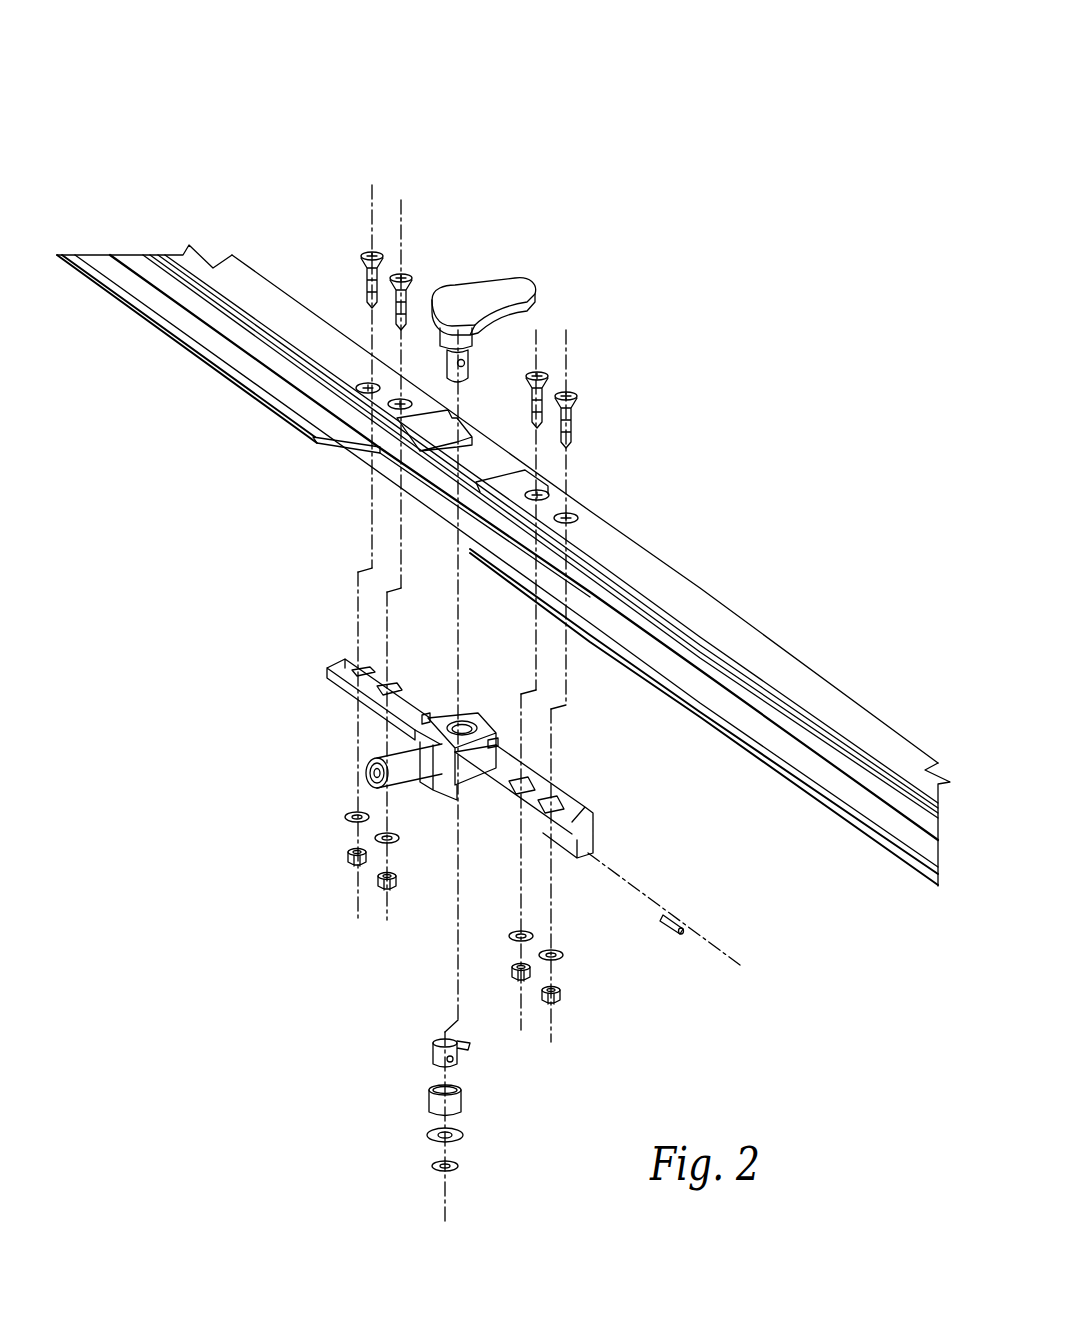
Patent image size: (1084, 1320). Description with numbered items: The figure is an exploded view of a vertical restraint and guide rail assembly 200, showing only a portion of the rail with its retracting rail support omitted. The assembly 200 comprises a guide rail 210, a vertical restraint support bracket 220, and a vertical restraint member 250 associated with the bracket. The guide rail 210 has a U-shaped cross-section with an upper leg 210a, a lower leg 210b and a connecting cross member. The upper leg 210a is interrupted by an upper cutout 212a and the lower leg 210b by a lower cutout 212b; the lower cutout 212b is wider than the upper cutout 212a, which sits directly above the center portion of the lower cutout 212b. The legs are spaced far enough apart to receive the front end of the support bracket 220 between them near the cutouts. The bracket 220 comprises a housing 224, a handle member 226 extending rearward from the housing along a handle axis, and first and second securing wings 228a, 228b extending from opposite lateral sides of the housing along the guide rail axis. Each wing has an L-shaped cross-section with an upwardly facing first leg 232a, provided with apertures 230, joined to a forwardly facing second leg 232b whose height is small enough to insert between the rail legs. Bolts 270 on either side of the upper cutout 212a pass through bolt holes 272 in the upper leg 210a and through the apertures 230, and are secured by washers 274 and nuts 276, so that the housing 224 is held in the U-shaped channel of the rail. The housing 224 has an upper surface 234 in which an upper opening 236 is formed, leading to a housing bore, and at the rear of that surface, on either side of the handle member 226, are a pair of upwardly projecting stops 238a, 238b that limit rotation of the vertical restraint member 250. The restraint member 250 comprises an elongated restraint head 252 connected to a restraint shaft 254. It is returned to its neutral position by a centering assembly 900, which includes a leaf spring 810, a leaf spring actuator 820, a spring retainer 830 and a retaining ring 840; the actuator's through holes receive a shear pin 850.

The vertical restraint and guide rail assembly 200 is at (205, 113).
The guide rail 210 is at (148, 238).
The upper leg 210a is at (804, 682).
The lower leg 210b is at (798, 760).
The upper cutout 212a is at (477, 462).
The lower cutout 212b is at (346, 457).
The vertical restraint support bracket 220 is at (332, 660).
The housing 224 is at (408, 742).
The handle member 226 is at (405, 790).
The first securing wing 228a is at (350, 712).
The second securing wing 228b is at (500, 808).
The apertures 230 is at (546, 802).
The upwardly facing first leg 232a is at (338, 672).
The forwardly facing second leg 232b is at (585, 850).
The upper surface 234 is at (447, 714).
The upper opening 236 is at (462, 718).
The upwardly projecting stop 238a is at (490, 742).
The upwardly projecting stop 238b is at (428, 715).
The vertical restraint member 250 is at (524, 266).
The elongated restraint head 252 is at (479, 297).
The restraint shaft 254 is at (440, 338).
The bolts 270 is at (366, 252).
The bolt holes 272 is at (365, 380).
The washers 274 is at (346, 818).
The nuts 276 is at (350, 859).
The shear pin 850 is at (673, 930).
The centering assembly 900 is at (343, 1035).
The leaf spring 810 is at (432, 1092).
The leaf spring actuator 820 is at (435, 1045).
The spring retainer 830 is at (430, 1131).
The retaining ring 840 is at (434, 1165).